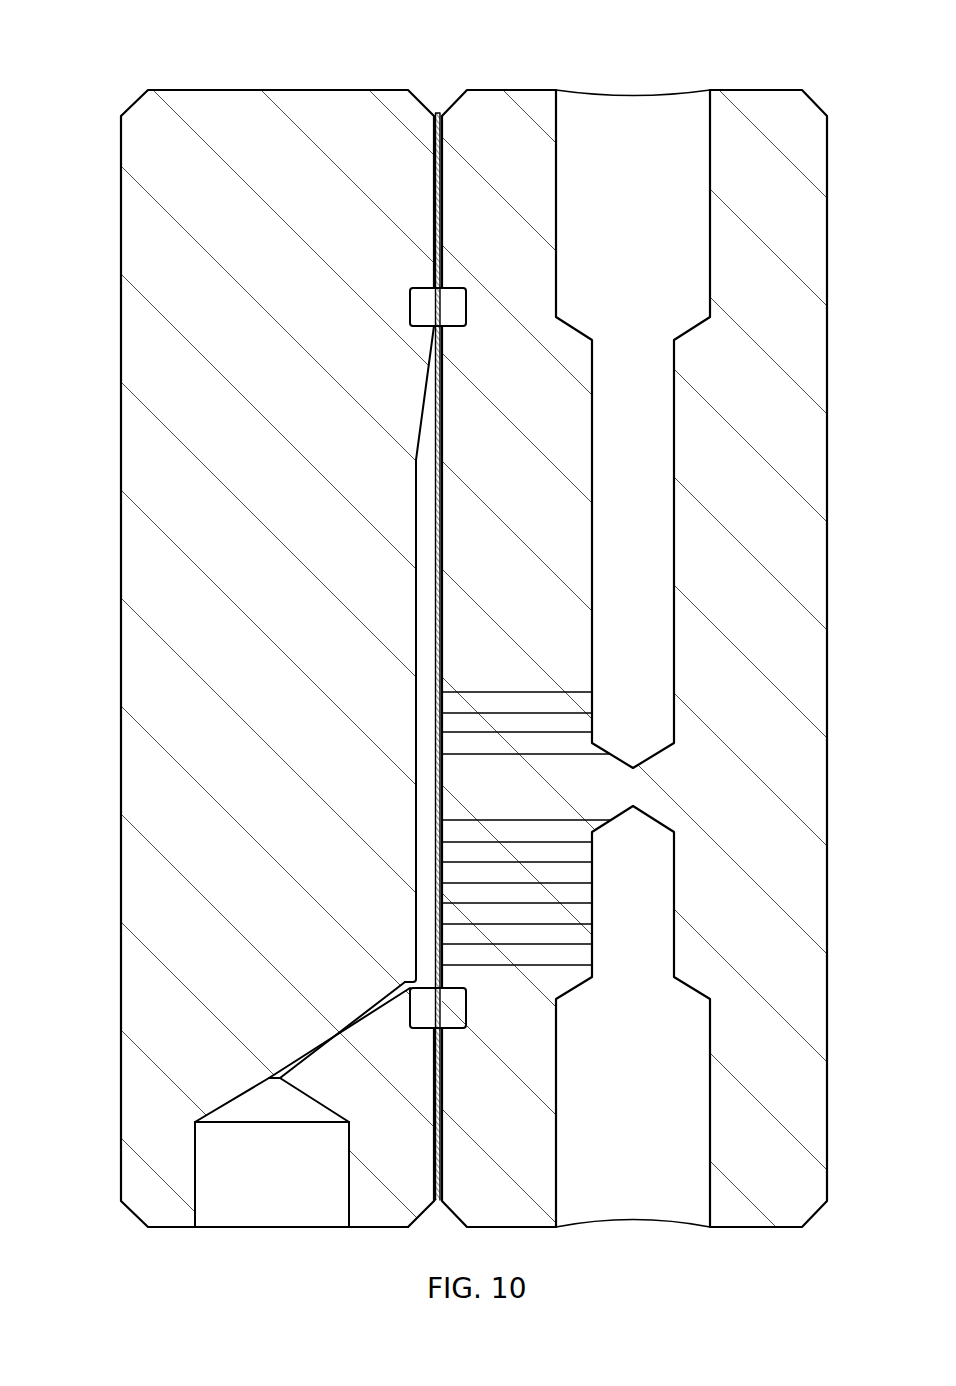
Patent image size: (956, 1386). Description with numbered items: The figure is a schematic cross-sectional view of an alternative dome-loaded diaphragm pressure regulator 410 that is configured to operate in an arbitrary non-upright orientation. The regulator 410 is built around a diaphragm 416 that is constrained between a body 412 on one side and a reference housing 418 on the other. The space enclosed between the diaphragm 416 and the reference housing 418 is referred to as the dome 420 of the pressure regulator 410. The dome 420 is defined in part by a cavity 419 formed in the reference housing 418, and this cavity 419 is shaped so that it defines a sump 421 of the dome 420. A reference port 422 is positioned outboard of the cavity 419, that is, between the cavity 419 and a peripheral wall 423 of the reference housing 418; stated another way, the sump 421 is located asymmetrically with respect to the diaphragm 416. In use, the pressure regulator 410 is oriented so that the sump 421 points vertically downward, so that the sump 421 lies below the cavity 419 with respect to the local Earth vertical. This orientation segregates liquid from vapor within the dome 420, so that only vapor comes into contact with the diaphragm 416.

The pressure regulator 410 is at (478, 693).
The body 412 is at (748, 97).
The diaphragm 416 is at (435, 112).
The reference housing 418 is at (209, 99).
The cavity 419 is at (393, 656).
The dome 420 is at (423, 587).
The sump 421 is at (413, 973).
The reference port 422 is at (197, 1215).
The peripheral wall 423 is at (378, 1229).